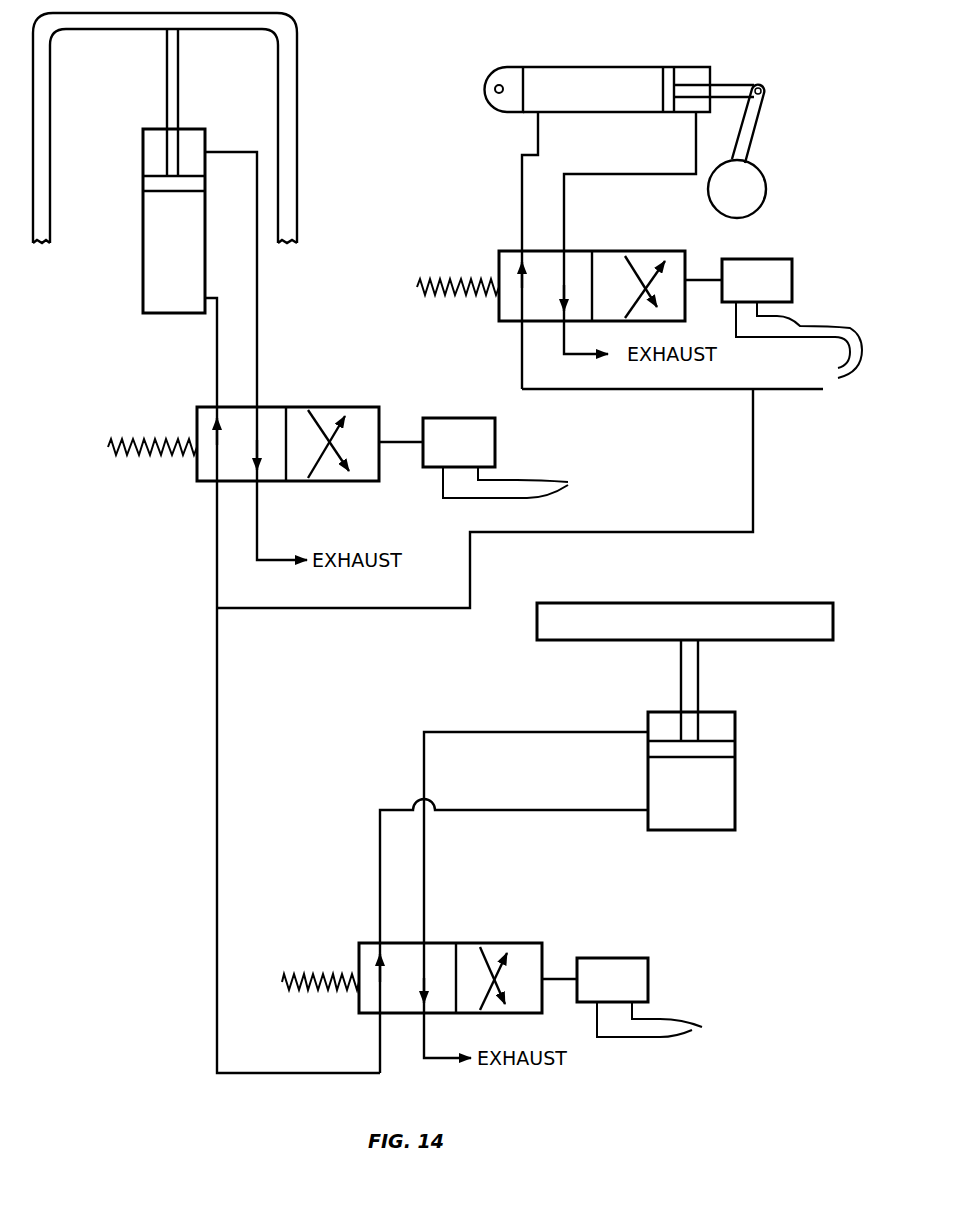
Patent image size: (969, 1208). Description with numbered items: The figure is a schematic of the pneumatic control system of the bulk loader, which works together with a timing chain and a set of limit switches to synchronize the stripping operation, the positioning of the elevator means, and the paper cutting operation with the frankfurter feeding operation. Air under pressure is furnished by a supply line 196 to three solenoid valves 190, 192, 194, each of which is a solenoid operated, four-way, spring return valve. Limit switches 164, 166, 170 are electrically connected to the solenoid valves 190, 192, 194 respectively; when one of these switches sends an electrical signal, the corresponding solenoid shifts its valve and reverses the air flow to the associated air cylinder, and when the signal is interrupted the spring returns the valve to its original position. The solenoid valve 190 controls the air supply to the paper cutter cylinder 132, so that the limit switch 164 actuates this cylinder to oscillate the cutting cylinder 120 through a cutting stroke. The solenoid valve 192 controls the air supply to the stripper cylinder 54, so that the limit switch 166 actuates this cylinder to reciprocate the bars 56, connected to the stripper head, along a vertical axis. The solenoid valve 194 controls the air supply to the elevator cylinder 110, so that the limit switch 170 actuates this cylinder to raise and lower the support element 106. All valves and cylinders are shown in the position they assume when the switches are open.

The stripper cylinder 54 is at (143, 269).
The bars 56 is at (297, 125).
The support element 106 is at (745, 603).
The elevator cylinder 110 is at (735, 808).
The cutting cylinder 120 is at (766, 197).
The paper cutter cylinder 132 is at (622, 67).
The limit switch 164 is at (799, 335).
The limit switch 166 is at (592, 482).
The limit switch 170 is at (713, 1028).
The solenoid valve 190 is at (613, 251).
The solenoid valve 192 is at (293, 407).
The solenoid valve 194 is at (745, 259).
The supply line 196 is at (814, 389).